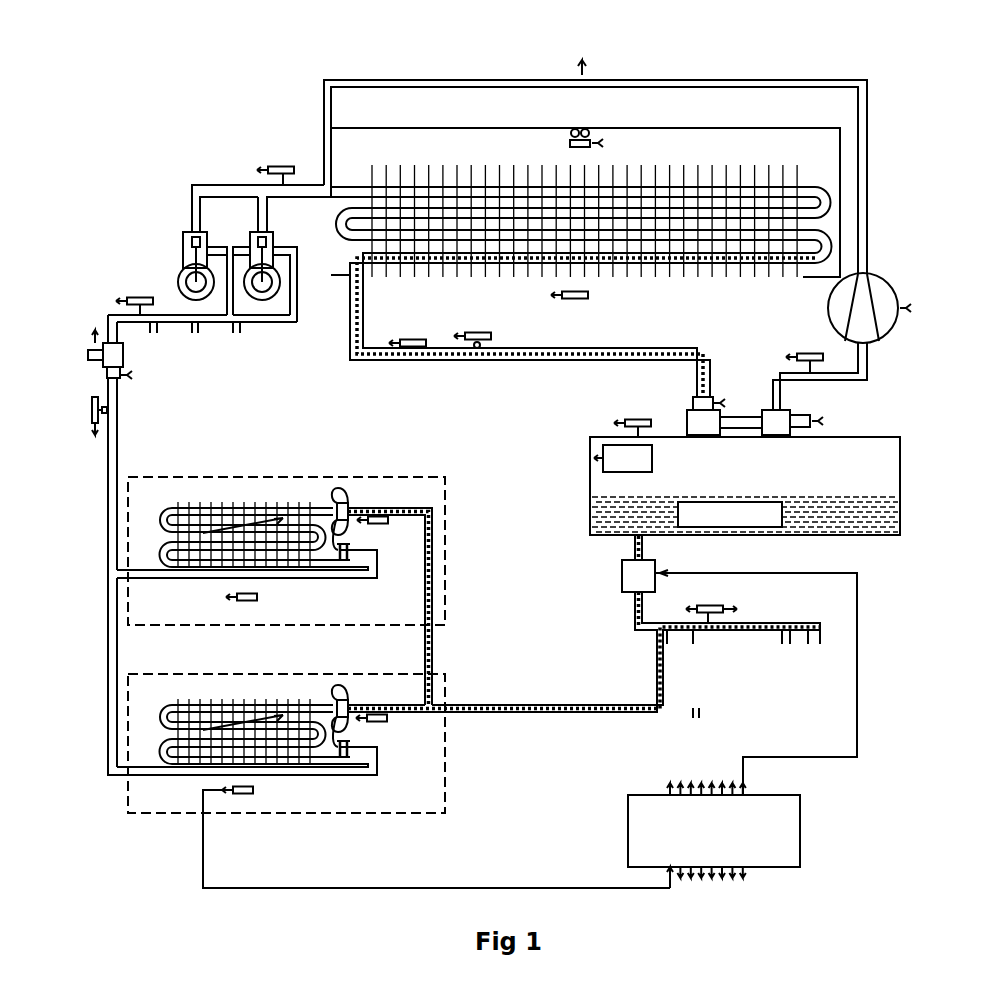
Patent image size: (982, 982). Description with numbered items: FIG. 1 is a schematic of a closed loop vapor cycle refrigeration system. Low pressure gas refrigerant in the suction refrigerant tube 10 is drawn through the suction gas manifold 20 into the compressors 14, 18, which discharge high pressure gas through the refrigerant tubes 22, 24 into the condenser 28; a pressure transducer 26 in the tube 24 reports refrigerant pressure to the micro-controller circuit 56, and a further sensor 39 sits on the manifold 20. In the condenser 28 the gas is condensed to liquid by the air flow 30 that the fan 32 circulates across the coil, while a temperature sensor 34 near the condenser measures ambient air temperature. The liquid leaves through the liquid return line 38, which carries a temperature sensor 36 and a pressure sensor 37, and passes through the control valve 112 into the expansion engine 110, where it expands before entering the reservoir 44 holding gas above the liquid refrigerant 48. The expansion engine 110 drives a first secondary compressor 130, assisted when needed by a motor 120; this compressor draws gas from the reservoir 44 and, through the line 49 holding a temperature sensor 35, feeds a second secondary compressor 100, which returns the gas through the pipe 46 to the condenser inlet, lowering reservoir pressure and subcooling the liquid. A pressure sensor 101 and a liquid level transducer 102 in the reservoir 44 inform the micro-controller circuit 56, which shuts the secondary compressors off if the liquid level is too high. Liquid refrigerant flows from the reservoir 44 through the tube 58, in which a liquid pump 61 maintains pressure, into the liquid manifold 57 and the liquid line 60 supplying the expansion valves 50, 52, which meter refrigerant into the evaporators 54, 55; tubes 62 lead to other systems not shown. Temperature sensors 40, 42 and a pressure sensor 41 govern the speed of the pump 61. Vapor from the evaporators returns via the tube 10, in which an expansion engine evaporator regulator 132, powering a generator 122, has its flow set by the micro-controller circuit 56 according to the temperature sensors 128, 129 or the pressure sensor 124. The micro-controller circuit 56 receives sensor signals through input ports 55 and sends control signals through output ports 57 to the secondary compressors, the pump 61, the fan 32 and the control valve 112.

The suction refrigerant tube 10 is at (118, 447).
The compressor 14 is at (185, 248).
The compressor 18 is at (252, 248).
The suction gas manifold 20 is at (297, 322).
The refrigerant tube 22 is at (228, 185).
The discharge refrigerant tube 24 is at (320, 205).
The pressure transducer 26 is at (297, 167).
The condenser 28 is at (353, 127).
The air flow 30 is at (588, 73).
The fan 32 is at (567, 142).
The temperature sensor 34 is at (575, 300).
The temperature sensor 35 is at (805, 352).
The temperature sensor 36 is at (421, 337).
The pressure sensor 37 is at (477, 331).
The liquid return line 38 is at (350, 356).
The pressure sensor 39 is at (155, 278).
The temperature sensor 40 is at (387, 721).
The pressure sensor 41 is at (695, 611).
The temperature sensor 42 is at (388, 521).
The reservoir 44 is at (590, 437).
The pipe 46 is at (836, 90).
The liquid refrigerant 48 is at (750, 528).
The line 49 is at (862, 380).
The expansion valve 50 is at (348, 698).
The expansion valve 52 is at (348, 503).
The evaporator 54 is at (265, 697).
The evaporator 55 is at (752, 878).
The micro-controller circuit 56 is at (714, 830).
The liquid manifold 57 is at (777, 622).
The tube 58 is at (635, 555).
The liquid line 60 is at (552, 705).
The liquid pump 61 is at (622, 588).
The tubes 62 is at (699, 716).
The second secondary compressor 100 is at (828, 328).
The pressure sensor 101 is at (640, 420).
The liquid level transducer 102 is at (623, 458).
The expansion engine 110 is at (700, 435).
The control valve 112 is at (693, 403).
The motor 120 is at (800, 418).
The generator 122 is at (93, 343).
The pressure sensor 124 is at (92, 422).
The temperature sensor 128 is at (257, 598).
The temperature sensor 129 is at (255, 792).
The secondary compressor 130 is at (765, 410).
The expansion engine evaporator regulator 132 is at (103, 367).